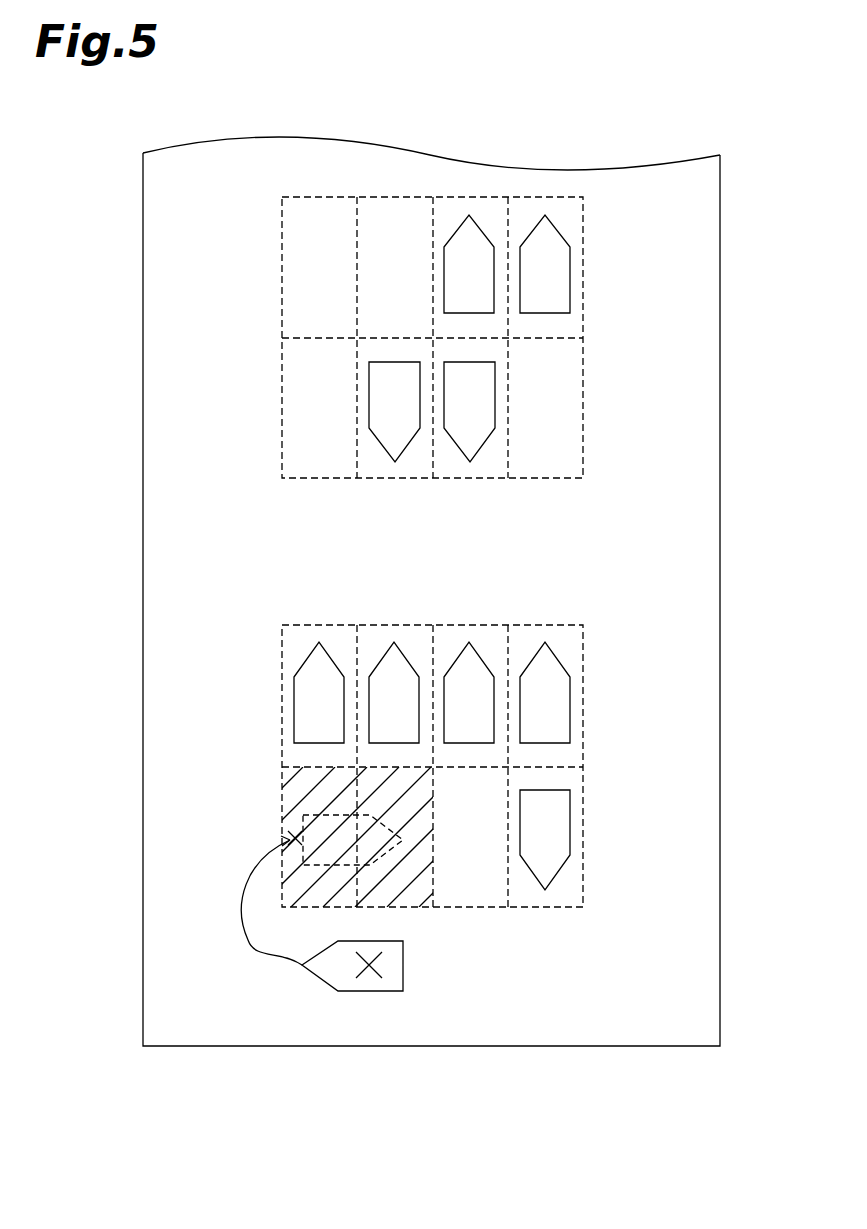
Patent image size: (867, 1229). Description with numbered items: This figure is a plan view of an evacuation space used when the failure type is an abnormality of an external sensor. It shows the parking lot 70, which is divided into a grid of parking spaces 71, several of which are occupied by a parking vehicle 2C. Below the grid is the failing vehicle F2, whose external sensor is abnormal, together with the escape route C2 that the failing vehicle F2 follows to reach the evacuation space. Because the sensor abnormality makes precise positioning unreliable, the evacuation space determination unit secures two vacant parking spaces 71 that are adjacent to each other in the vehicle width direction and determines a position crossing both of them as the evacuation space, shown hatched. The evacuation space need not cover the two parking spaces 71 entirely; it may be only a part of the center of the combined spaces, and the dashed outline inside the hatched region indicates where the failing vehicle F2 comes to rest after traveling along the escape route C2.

The parking lot 70 is at (143, 214).
The parking space 71 is at (270, 367).
The parking vehicle 2C is at (531, 235).
The escape route C2 is at (250, 945).
The failing vehicle F2 is at (353, 991).